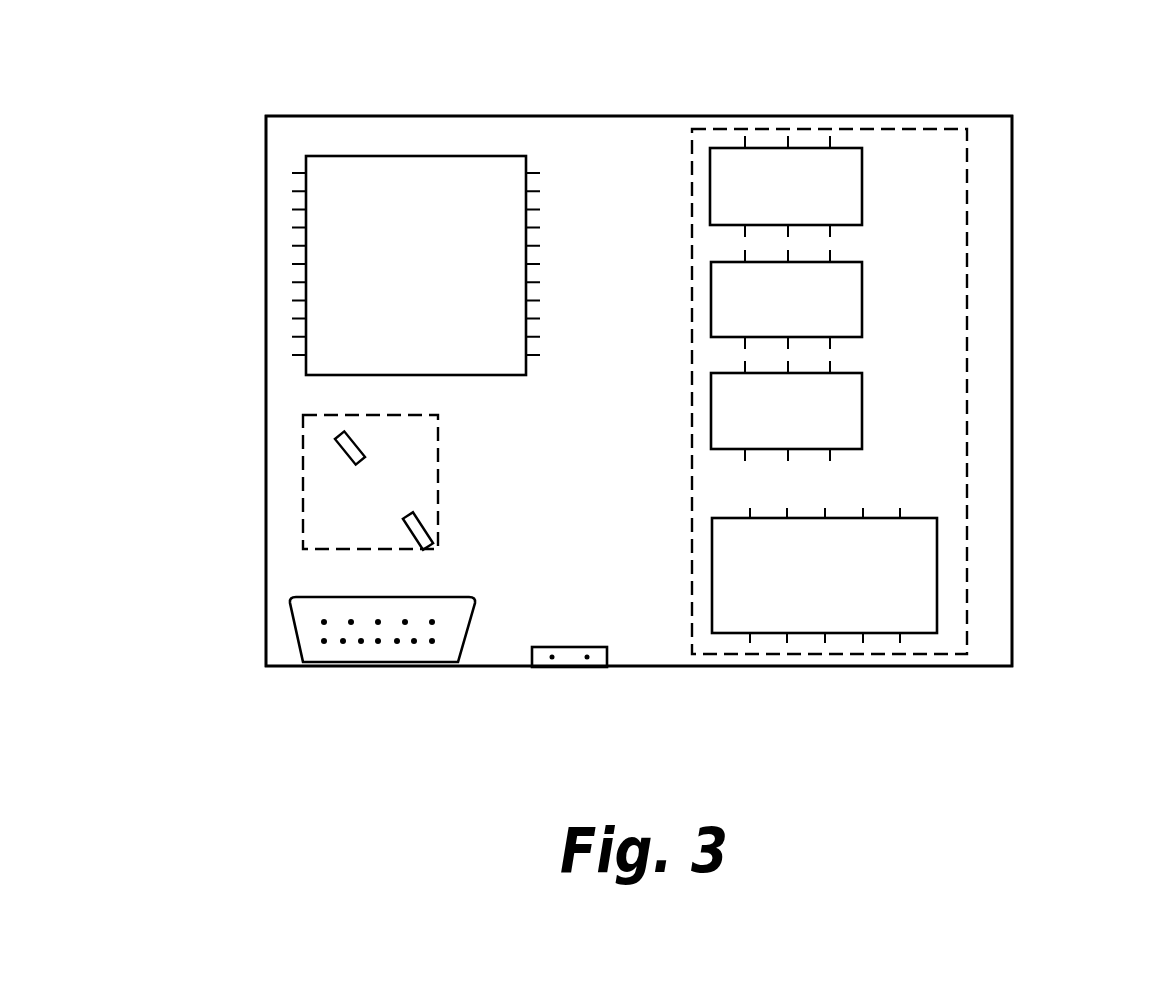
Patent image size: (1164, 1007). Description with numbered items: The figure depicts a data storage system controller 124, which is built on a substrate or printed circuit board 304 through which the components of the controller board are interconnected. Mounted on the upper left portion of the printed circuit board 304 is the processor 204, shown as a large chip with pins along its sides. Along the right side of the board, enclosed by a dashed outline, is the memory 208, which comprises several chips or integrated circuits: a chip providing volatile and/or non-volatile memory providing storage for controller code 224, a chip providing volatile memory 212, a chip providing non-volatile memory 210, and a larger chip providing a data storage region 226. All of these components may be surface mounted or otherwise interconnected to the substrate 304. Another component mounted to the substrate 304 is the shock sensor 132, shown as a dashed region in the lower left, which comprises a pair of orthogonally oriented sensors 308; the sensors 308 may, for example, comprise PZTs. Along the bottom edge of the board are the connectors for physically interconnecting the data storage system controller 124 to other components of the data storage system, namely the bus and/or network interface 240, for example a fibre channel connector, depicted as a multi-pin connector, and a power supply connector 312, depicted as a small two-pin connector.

The data storage system controller 124 is at (947, 116).
The shock sensor 132 is at (302, 527).
The processor 204 is at (348, 156).
The memory 208 is at (767, 129).
The non-volatile memory 210 is at (862, 390).
The volatile memory 212 is at (862, 275).
The memory providing storage for controller code 224 is at (862, 158).
The data storage region 226 is at (918, 633).
The bus and/or network interface 240 is at (297, 637).
The printed circuit board 304 is at (1012, 390).
The sensors 308 is at (337, 447).
The power supply connector 312 is at (532, 657).